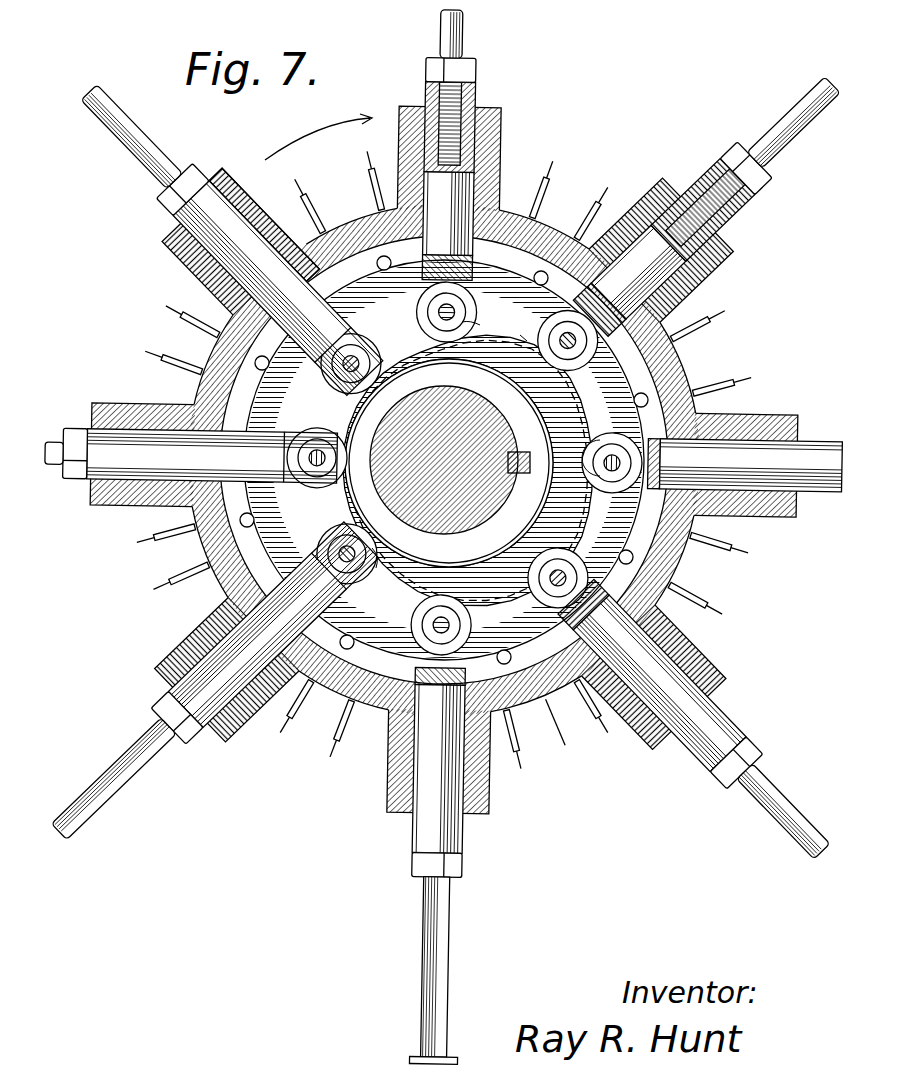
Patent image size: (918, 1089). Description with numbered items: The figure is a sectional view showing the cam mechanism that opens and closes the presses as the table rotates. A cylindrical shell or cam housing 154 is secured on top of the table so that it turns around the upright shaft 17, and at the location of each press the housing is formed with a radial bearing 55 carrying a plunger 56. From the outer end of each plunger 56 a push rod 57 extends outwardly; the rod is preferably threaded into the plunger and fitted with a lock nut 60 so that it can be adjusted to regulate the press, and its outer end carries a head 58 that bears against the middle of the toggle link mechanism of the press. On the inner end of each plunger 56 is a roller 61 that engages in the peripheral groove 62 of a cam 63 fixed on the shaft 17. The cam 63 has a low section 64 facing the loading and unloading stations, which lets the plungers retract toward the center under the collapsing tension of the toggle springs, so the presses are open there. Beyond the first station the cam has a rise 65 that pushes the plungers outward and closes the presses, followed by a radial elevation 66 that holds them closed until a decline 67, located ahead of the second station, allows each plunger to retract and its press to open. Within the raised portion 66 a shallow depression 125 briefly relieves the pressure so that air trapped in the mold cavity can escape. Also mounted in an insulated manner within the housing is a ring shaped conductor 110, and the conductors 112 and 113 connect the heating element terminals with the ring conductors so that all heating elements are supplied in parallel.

The upright shaft 17 is at (408, 405).
The radial bearing 55 is at (503, 128).
The plunger 56 is at (477, 100).
The push rod 57 is at (460, 32).
The head 58 is at (412, 1058).
The lock nut 60 is at (478, 70).
The roller 61 is at (420, 305).
The peripheral groove 62 is at (400, 600).
The cam 63 is at (438, 402).
The low section 64 is at (339, 420).
The rise 65 is at (482, 316).
The radial elevation 66 is at (521, 335).
The decline 67 is at (352, 545).
The ring shaped conductor 110 is at (256, 408).
The conductor 112 is at (376, 151).
The conductor 113 is at (300, 182).
The shallow depression 125 is at (600, 452).
The cam housing 154 is at (565, 742).